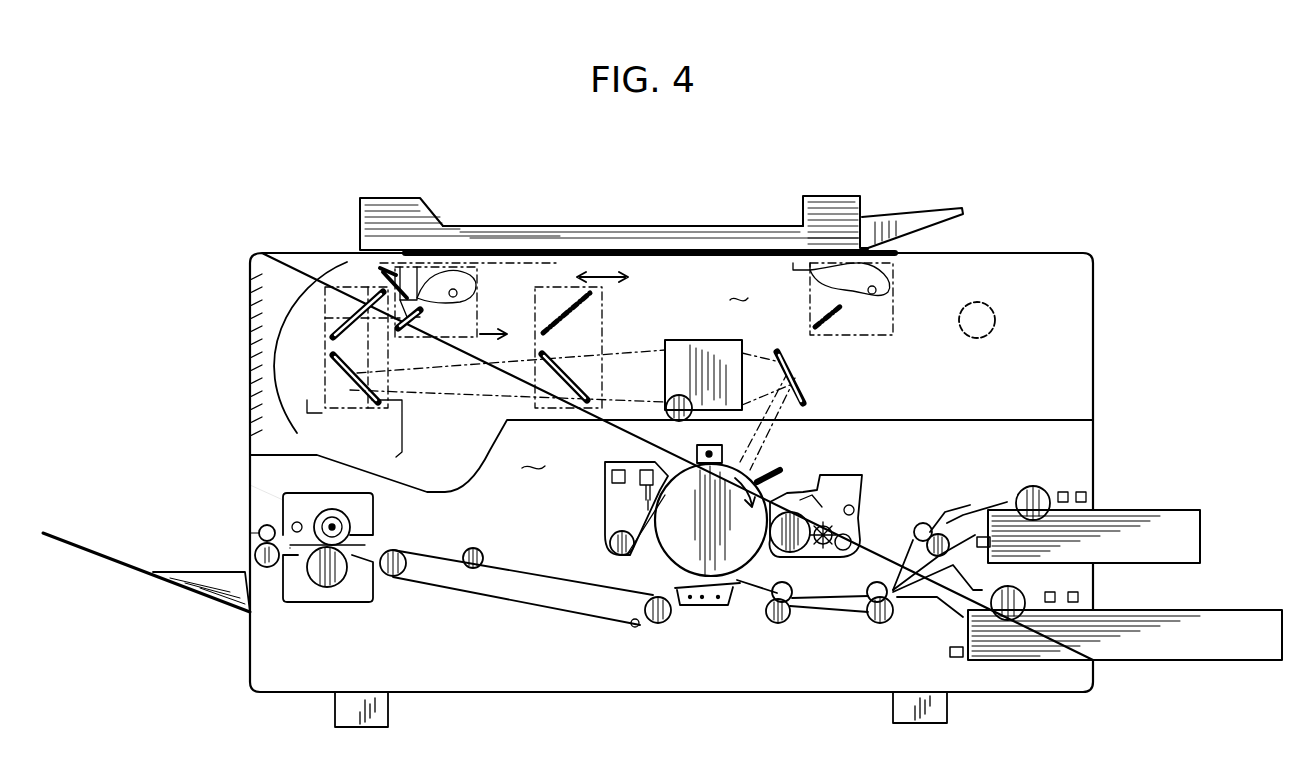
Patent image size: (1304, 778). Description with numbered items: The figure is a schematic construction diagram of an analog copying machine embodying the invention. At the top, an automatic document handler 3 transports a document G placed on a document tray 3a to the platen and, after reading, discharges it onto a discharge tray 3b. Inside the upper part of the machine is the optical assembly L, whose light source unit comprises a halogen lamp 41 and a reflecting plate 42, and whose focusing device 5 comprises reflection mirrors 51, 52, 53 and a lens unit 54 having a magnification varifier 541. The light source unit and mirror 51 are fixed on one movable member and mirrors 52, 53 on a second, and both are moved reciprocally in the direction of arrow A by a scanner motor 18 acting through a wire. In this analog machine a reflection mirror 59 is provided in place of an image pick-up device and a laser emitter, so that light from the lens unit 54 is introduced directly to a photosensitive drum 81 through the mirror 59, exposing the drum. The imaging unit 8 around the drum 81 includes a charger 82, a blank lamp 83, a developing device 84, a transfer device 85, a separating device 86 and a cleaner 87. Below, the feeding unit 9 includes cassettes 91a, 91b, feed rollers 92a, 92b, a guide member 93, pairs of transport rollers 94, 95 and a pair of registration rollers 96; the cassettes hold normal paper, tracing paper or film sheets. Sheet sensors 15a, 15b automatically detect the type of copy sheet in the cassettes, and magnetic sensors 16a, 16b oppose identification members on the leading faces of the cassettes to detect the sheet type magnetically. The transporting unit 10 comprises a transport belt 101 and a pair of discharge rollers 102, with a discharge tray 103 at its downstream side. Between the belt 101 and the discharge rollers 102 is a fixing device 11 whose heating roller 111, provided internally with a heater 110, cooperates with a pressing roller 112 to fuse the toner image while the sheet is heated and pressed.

The automatic document handler 3 is at (842, 196).
The document tray 3a is at (942, 208).
The discharge tray 3b is at (518, 226).
The document G is at (537, 250).
The focusing device 5 is at (318, 353).
The reflection mirror 52 is at (367, 298).
The reflection mirror 53 is at (350, 390).
The halogen lamp 41 is at (455, 278).
The reflecting plate 42 is at (473, 296).
The reflection mirror 51 is at (410, 326).
The arrow direction A is at (505, 336).
The lens unit 54 is at (708, 340).
The magnification varifier 541 is at (681, 400).
The optical assembly L is at (740, 283).
The reflection mirror 59 is at (793, 368).
The scanner motor 18 is at (995, 314).
The imaging unit 8 is at (533, 454).
The photosensitive drum 81 is at (668, 543).
The charger 82 is at (697, 452).
The blank lamp 83 is at (762, 470).
The developing device 84 is at (812, 556).
The transfer device 85 is at (720, 608).
The separating device 86 is at (690, 608).
The cleaner 87 is at (606, 510).
The feeding unit 9 is at (855, 654).
The guide member 93 is at (928, 595).
The pair of transport rollers 94 is at (882, 621).
The pair of transport rollers 95 is at (935, 530).
The pair of registration rollers 96 is at (782, 622).
The cassette 91a is at (1200, 609).
The cassette 91b is at (1140, 510).
The feed roller 92a is at (1015, 588).
The feed roller 92b is at (1038, 490).
The sheet sensor 15a is at (1094, 603).
The sheet sensor 15b is at (1088, 489).
The magnetic sensor 16a is at (957, 661).
The magnetic sensor 16b is at (981, 537).
The transporting unit 10 is at (577, 630).
The transport belt 101 is at (500, 601).
The fixing device 11 is at (330, 604).
The heater 110 is at (352, 520).
The heating roller 111 is at (283, 498).
The pressing roller 112 is at (338, 573).
The pair of discharge rollers 102 is at (270, 567).
The discharge tray 103 is at (180, 583).